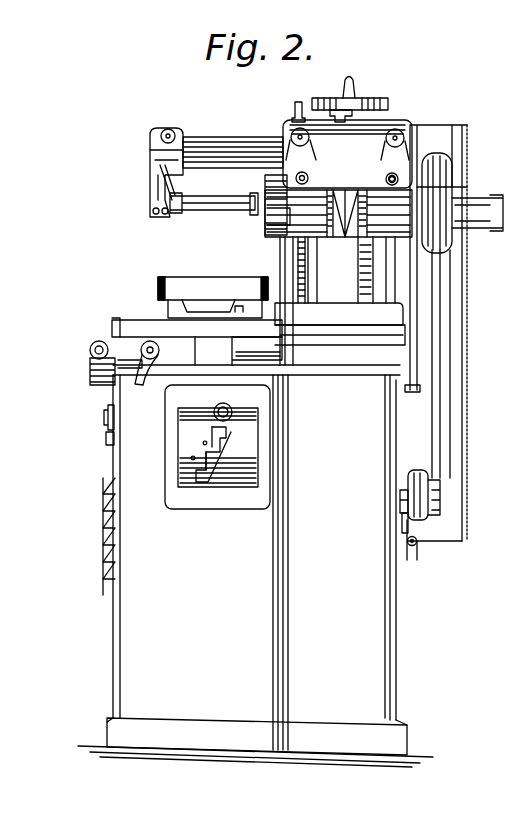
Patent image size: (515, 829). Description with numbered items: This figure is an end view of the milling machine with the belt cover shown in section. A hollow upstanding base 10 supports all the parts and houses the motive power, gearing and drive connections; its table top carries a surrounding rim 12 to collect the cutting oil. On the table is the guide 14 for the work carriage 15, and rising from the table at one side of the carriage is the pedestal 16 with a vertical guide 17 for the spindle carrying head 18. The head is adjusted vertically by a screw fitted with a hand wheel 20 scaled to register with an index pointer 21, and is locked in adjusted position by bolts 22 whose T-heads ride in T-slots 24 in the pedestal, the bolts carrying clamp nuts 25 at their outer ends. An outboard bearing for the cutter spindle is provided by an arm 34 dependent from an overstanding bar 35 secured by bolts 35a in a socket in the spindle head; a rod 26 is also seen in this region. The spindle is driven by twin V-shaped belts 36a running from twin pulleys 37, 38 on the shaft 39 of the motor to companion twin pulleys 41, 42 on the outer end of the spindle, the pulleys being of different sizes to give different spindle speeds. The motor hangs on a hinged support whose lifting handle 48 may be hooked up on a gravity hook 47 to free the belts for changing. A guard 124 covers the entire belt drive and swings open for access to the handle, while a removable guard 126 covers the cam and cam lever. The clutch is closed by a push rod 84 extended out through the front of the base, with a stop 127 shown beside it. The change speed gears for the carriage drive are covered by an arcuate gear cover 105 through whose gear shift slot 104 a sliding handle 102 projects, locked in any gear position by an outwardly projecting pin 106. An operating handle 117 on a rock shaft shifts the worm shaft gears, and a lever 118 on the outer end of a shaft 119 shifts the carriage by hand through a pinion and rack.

The hollow upstanding base 10 is at (382, 598).
The surrounding rim 12 is at (133, 322).
The guide 14 is at (168, 312).
The work carriage 15 is at (207, 287).
The pedestal 16 is at (282, 258).
The vertical guide 17 is at (343, 297).
The spindle carrying head 18 is at (370, 133).
The hand wheel 20 is at (360, 103).
The index pointer 21 is at (297, 108).
The bolts 22 is at (385, 178).
The T-slots 24 is at (383, 256).
The clamp nuts 25 is at (388, 176).
The rod 26 is at (212, 203).
The arm 34 is at (152, 183).
The overstanding bar 35 is at (232, 146).
The bolts 35a is at (284, 132).
The twin V-shaped belts 36a is at (445, 348).
The twin pulley 37 is at (457, 518).
The twin pulley 38 is at (418, 472).
The shaft of motor 39 is at (402, 490).
The spindle pulley 41 is at (452, 158).
The spindle pulley 42 is at (425, 170).
The hook 47 is at (405, 528).
The lifting handle 48 is at (413, 545).
The push rod 84 is at (105, 421).
The sliding handle 102 is at (233, 400).
The gear shift slot 104 is at (208, 477).
The arcuate gear cover 105 is at (260, 462).
The outwardly projecting pin 106 is at (192, 458).
The operating handle 117 is at (140, 383).
The lever 118 is at (89, 348).
The shaft 119 is at (90, 373).
The guard 124 is at (463, 410).
The removable guard 126 is at (382, 318).
The stop 127 is at (110, 436).